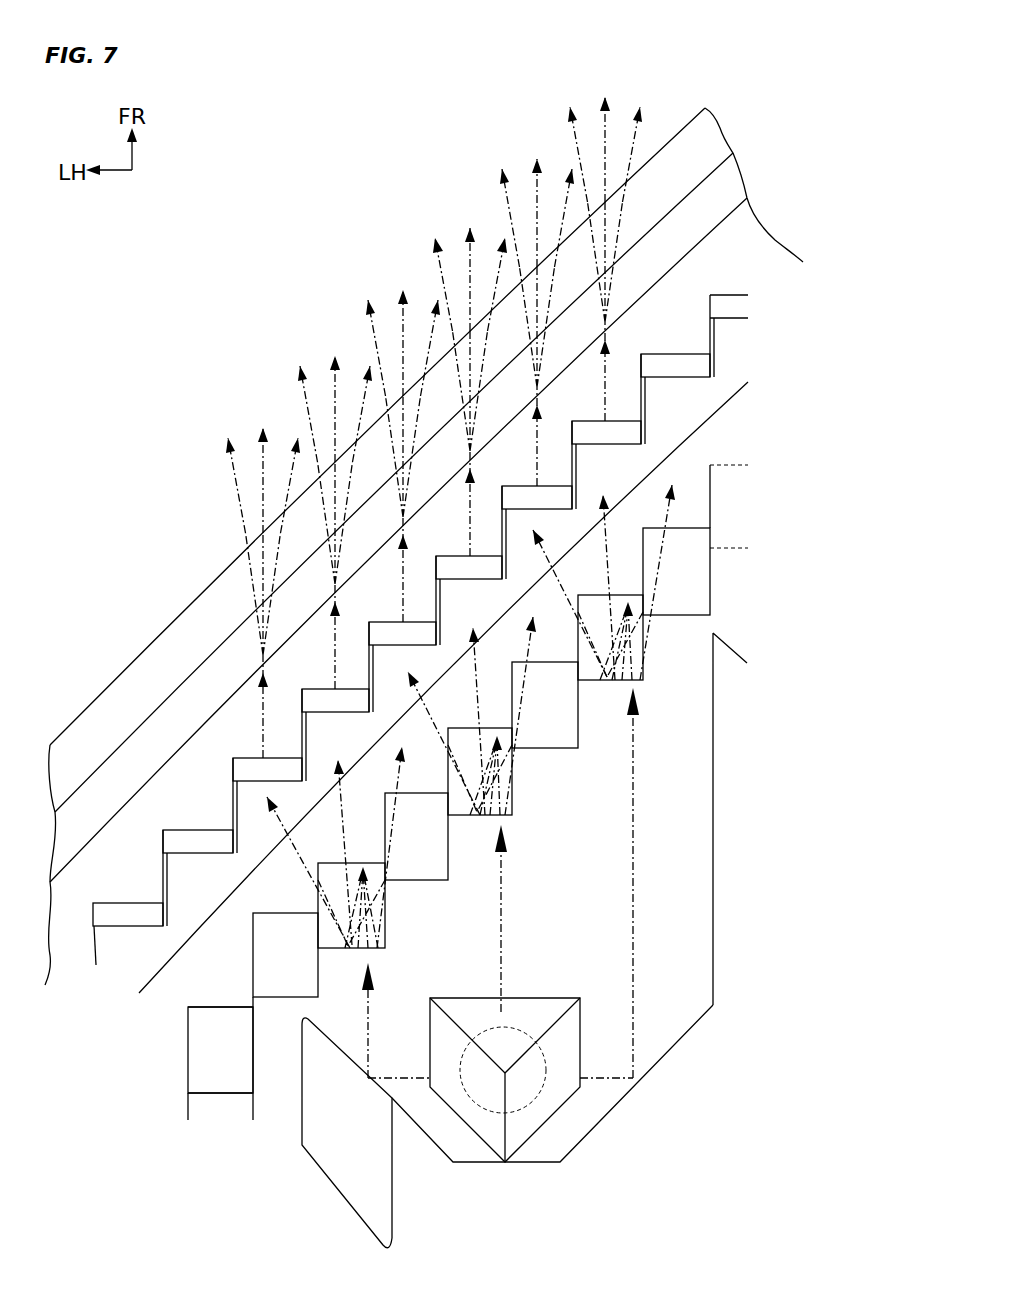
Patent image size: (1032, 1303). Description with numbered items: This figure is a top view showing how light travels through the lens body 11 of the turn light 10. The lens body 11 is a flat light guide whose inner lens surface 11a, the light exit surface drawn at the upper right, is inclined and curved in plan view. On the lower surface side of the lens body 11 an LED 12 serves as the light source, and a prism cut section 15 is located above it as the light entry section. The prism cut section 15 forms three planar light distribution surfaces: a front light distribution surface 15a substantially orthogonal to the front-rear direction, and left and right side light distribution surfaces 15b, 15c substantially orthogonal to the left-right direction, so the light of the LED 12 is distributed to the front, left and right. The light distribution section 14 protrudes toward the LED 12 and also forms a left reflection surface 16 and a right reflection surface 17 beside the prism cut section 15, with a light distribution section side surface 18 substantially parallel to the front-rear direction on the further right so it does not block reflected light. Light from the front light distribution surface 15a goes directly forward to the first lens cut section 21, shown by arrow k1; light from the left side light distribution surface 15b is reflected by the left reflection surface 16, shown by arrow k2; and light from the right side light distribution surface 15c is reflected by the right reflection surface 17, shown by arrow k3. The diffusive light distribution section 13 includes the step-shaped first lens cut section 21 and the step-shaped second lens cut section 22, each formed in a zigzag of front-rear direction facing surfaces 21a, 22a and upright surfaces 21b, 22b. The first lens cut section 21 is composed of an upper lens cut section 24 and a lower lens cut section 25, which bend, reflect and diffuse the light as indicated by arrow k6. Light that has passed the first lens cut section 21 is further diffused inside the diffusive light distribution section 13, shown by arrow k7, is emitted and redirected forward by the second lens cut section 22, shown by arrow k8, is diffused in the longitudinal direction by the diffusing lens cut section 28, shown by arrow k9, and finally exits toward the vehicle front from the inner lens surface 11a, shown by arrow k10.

The turn light 10 is at (424, 513).
The lens body 11 is at (424, 513).
The inner lens surface 11a is at (668, 140).
The LED 12 is at (545, 1105).
The diffusive light distribution section 13 is at (192, 628).
The light distribution section 14 is at (595, 897).
The prism cut section 15 is at (500, 1130).
The front light distribution surface 15a is at (502, 1052).
The left side light distribution surface 15b is at (457, 1100).
The right side light distribution surface 15c is at (518, 1128).
The left reflection surface 16 is at (385, 1093).
The right reflection surface 17 is at (645, 1077).
The light distribution section side surface 18 is at (715, 910).
The first lens cut section 21 is at (401, 815).
The front-rear direction facing surface 21a is at (108, 1030).
The upright surface 21b is at (257, 977).
The second lens cut section 22 is at (405, 644).
The front-rear direction facing surface 22a is at (178, 838).
The upright surface 22b is at (160, 905).
The upper lens cut section 24 is at (273, 997).
The lower lens cut section 25 is at (272, 978).
The diffusing lens cut section 28 is at (190, 660).
The arrow k1 is at (503, 893).
The arrow k2 is at (370, 1033).
The arrow k3 is at (635, 805).
The arrow k6 is at (378, 927).
The arrow k7 is at (310, 884).
The arrow k8 is at (240, 700).
The arrow k9 is at (324, 518).
The arrow k10 is at (307, 427).